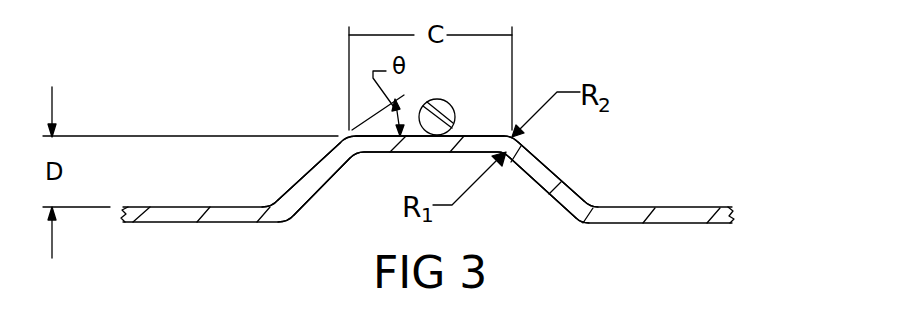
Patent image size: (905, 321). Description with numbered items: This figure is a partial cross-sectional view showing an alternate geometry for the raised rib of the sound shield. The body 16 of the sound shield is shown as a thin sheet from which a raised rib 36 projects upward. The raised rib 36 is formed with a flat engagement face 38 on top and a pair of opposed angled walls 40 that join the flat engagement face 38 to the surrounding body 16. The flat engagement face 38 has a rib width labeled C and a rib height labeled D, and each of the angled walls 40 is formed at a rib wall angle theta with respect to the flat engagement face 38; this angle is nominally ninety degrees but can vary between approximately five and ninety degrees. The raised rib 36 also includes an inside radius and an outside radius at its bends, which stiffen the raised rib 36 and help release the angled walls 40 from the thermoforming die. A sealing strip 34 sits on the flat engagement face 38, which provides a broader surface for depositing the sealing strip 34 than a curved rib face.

The body 16 is at (672, 215).
The sealing strip 34 is at (437, 98).
The raised rib 36 is at (258, 110).
The flat engagement face 38 is at (497, 135).
The angled walls 40 is at (313, 187).